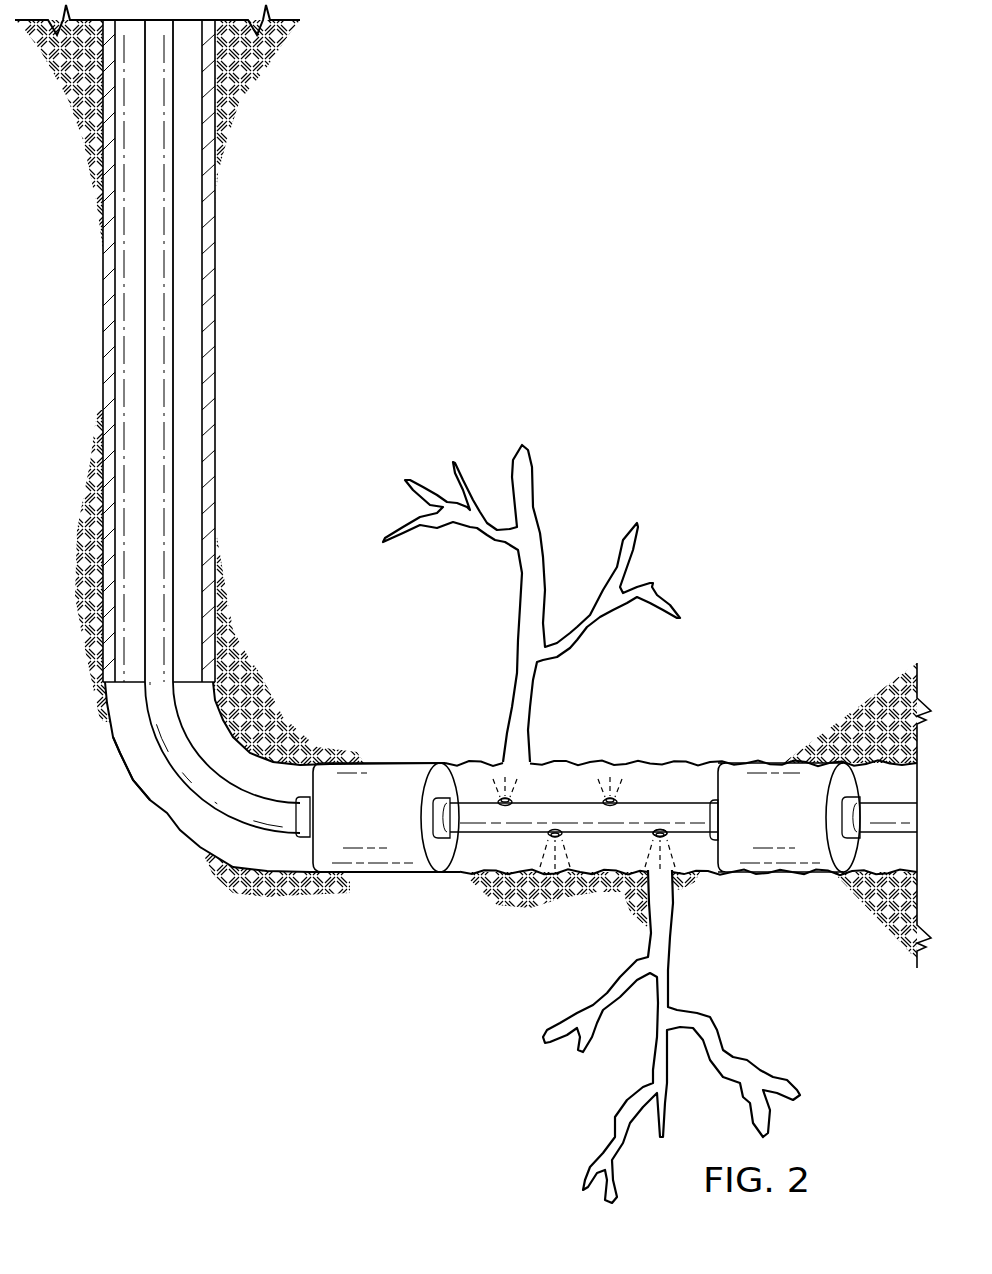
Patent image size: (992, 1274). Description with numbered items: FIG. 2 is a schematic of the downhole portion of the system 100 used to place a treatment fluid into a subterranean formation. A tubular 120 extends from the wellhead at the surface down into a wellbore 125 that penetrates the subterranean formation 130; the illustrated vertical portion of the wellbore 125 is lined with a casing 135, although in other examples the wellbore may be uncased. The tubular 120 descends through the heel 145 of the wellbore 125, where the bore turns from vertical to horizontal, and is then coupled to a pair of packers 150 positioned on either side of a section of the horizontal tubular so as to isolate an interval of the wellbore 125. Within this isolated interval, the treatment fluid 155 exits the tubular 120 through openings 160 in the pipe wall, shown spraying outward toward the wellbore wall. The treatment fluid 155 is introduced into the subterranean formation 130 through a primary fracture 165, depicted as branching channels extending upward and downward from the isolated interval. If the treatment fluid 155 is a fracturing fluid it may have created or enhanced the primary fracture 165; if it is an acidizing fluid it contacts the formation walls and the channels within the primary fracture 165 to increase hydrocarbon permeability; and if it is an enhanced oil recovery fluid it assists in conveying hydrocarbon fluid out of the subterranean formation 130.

The system 100 is at (552, 280).
The tubular 120 is at (203, 330).
The wellbore 125 is at (213, 248).
The subterranean formation 130 is at (833, 592).
The casing 135 is at (202, 463).
The heel 145 is at (152, 820).
The packers 150 is at (402, 864).
The treatment fluid 155 is at (510, 798).
The openings 160 is at (664, 824).
The primary fracture 165 is at (510, 704).